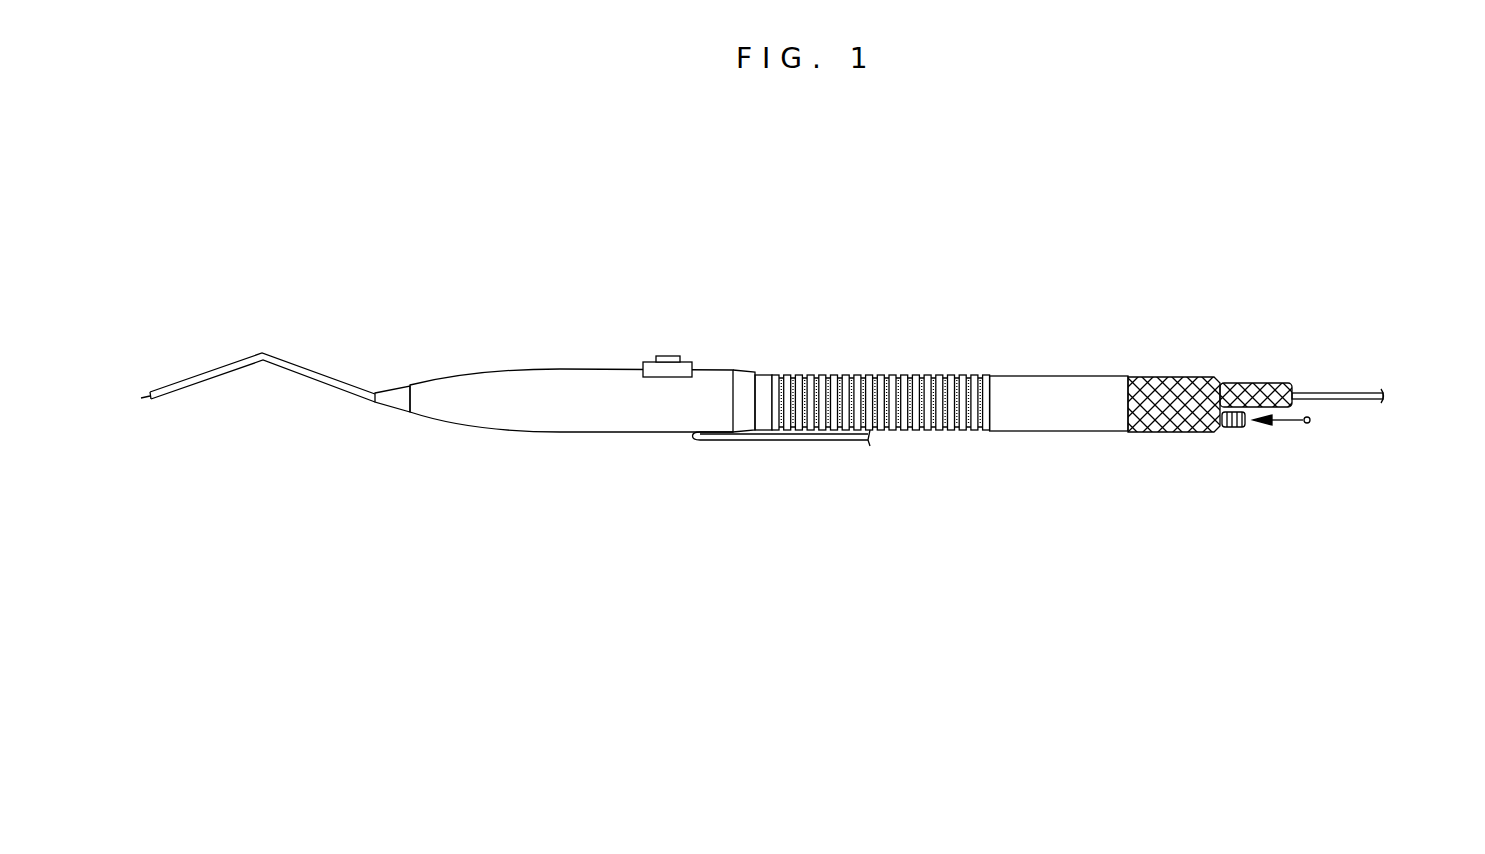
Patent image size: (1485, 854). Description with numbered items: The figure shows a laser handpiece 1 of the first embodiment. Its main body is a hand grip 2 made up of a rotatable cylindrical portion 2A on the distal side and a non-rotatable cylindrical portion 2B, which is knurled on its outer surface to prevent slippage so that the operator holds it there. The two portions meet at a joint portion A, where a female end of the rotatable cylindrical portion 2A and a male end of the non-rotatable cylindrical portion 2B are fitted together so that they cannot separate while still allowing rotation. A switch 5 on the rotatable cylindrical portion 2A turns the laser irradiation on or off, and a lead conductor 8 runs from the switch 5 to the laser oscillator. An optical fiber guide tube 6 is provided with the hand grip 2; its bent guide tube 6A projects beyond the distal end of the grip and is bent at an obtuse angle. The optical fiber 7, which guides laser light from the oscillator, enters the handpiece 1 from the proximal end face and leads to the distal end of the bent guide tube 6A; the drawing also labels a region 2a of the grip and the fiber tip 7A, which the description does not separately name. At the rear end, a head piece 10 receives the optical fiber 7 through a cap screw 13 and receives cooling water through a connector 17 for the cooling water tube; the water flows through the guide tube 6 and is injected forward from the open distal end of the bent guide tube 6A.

The handpiece 1 is at (870, 290).
The hand grip 2 is at (541, 350).
The rotatable cylindrical portion 2A is at (591, 433).
The non-rotatable cylindrical portion 2B is at (927, 431).
The straight rear portion of body 2a is at (925, 377).
The switch 5 is at (687, 354).
The optical fiber guide tube 6 is at (317, 364).
The bent guide tube 6A is at (282, 370).
The optical fiber 7 is at (1340, 393).
The probe tip 7A is at (150, 400).
The lead conductor 8 is at (781, 442).
The head piece 10 is at (1170, 378).
The cap screw 13 is at (1262, 383).
The connector for the cooling water tube 17 is at (1233, 428).
The joint portion A is at (745, 352).